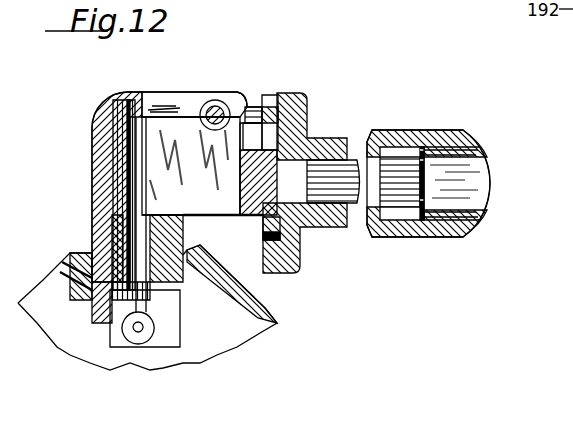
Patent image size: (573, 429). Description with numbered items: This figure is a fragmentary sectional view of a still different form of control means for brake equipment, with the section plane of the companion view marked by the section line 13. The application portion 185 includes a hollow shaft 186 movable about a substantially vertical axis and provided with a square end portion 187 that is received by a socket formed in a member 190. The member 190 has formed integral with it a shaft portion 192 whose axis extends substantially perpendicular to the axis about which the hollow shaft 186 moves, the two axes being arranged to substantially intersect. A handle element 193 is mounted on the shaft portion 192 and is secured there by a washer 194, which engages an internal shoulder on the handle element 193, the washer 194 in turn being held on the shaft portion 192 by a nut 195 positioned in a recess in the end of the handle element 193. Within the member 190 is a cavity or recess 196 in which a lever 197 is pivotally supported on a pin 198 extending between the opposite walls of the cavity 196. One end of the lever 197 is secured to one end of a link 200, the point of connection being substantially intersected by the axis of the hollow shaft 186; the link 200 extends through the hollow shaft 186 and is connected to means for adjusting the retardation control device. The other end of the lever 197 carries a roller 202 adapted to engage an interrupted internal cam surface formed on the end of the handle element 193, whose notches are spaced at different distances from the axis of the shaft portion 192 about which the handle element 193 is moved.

The application portion 185 is at (276, 336).
The hollow shaft 186 is at (100, 305).
The square end portion 187 is at (112, 225).
The member 190 is at (103, 145).
The shaft portion 192 is at (315, 173).
The handle element 193 is at (377, 137).
The washer 194 is at (425, 147).
The nut 195 is at (480, 160).
The cavity or recess 196 is at (127, 127).
The lever 197 is at (160, 108).
The pin 198 is at (220, 108).
The link 200 is at (135, 160).
The roller 202 is at (270, 107).
The section line 13- 13 is at (287, 293).